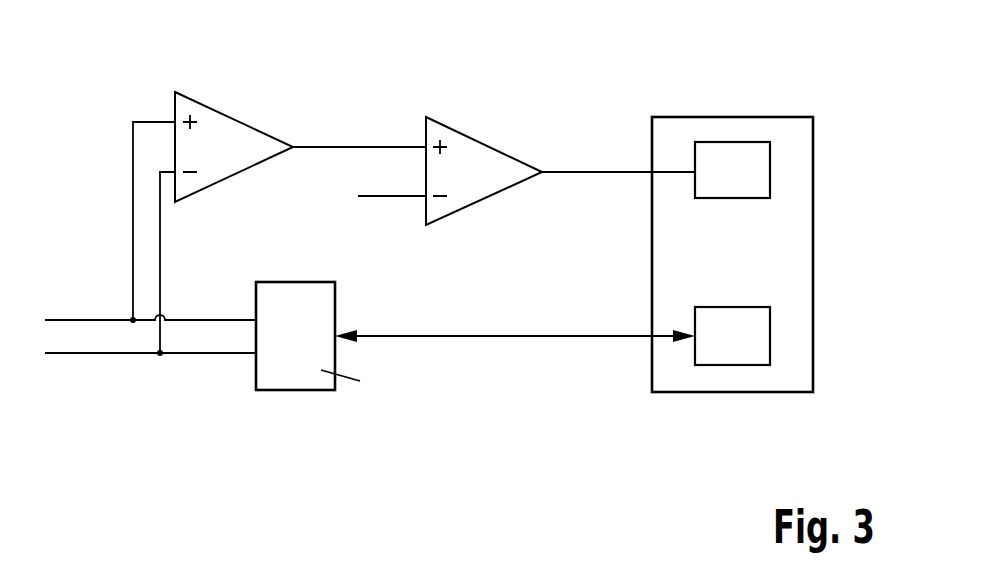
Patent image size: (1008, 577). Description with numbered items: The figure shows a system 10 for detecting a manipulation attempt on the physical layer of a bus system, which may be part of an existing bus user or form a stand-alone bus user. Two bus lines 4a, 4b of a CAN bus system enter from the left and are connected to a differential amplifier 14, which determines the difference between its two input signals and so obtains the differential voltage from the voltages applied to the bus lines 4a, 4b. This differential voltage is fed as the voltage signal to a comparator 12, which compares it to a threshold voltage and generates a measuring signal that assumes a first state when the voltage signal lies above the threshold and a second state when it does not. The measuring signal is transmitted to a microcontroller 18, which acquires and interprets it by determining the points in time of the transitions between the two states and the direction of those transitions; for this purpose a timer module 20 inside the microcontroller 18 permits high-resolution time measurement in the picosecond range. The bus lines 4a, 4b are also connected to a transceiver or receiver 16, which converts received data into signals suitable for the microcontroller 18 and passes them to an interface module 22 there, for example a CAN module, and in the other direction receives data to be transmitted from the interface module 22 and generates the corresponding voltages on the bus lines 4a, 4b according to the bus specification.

The system 10 is at (803, 82).
The comparator 12 is at (483, 145).
The differential amplifier 14 is at (237, 120).
The transceiver or receiver 16 is at (295, 391).
The microcontroller 18 is at (813, 252).
The timer module 20 is at (731, 142).
The interface module 22 is at (732, 366).
The bus line 4a is at (68, 318).
The bus line 4b is at (68, 355).